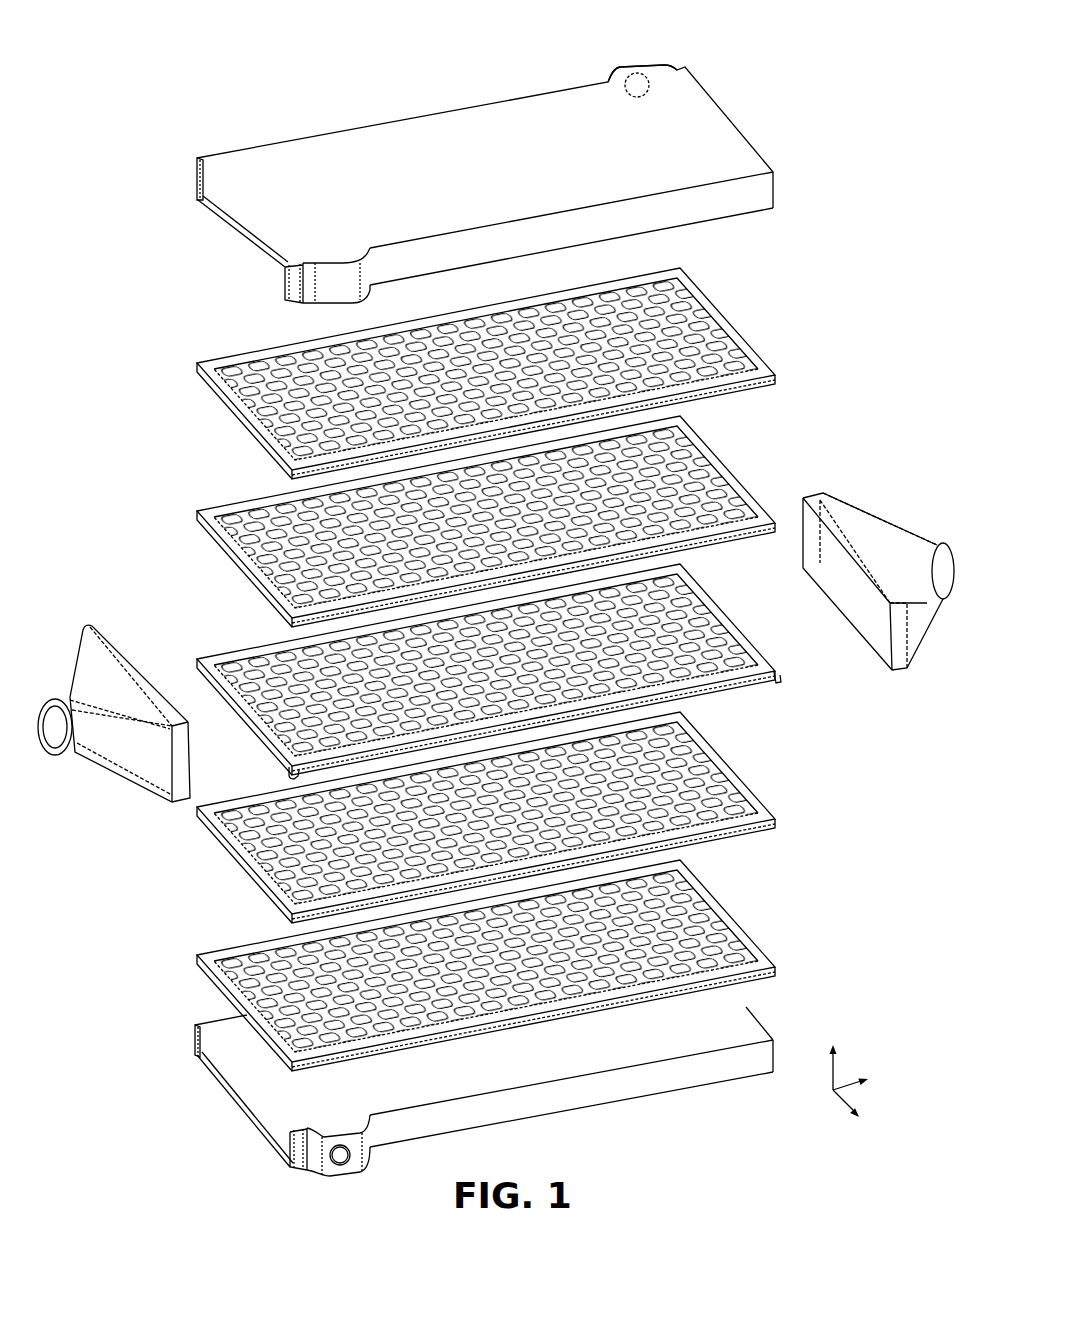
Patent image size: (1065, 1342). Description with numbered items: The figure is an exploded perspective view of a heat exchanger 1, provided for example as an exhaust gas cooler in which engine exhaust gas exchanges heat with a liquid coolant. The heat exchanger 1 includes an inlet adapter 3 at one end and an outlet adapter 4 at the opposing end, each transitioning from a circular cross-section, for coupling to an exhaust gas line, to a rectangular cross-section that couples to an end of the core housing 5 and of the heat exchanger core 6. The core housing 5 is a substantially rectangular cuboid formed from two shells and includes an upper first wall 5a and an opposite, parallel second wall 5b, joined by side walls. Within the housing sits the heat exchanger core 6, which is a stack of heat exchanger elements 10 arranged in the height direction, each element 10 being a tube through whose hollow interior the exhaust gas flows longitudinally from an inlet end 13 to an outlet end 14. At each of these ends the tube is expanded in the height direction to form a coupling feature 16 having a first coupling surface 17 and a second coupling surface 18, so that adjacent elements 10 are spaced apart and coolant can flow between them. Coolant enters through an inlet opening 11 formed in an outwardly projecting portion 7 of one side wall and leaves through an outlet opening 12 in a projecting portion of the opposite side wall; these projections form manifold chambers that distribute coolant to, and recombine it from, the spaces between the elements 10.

The heat exchanger 1 is at (146, 93).
The inlet adapter 3 is at (98, 627).
The outlet adapter 4 is at (863, 527).
The core housing 5 is at (374, 114).
The first wall 5a is at (290, 176).
The second wall 5b is at (272, 1113).
The heat exchanger core 6 is at (190, 460).
The outwardly projecting portion 7 is at (613, 68).
The heat exchanger element 10 is at (792, 380).
The inlet opening 11 is at (640, 72).
The outlet opening 12 is at (353, 1156).
The inlet end 13 is at (262, 731).
The outlet end 14 is at (719, 600).
The coupling feature 16 is at (209, 643).
The first coupling surface 17 is at (203, 657).
The second coupling surface 18 is at (288, 775).